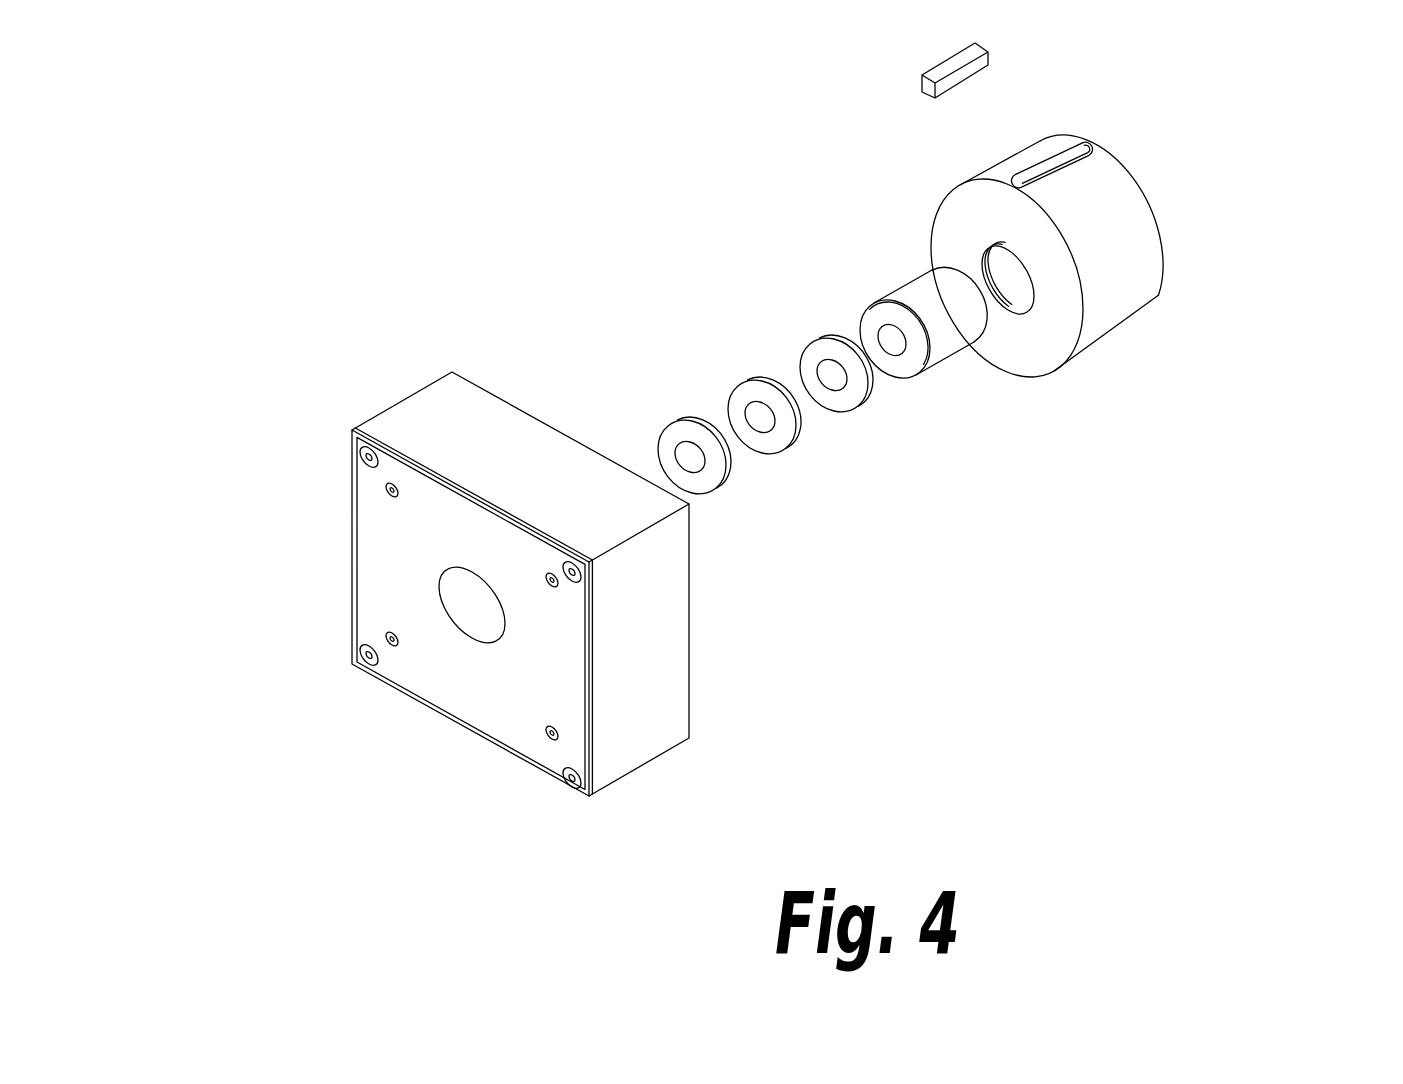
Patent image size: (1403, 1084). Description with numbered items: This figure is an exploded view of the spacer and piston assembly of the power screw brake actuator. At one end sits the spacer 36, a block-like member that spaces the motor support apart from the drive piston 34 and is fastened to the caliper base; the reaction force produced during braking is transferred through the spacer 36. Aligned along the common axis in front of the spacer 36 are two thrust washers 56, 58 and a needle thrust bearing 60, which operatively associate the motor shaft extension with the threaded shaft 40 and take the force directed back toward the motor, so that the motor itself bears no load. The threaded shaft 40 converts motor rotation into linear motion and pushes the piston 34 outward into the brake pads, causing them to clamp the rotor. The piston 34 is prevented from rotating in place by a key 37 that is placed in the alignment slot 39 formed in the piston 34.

The drive piston 34 is at (1160, 296).
The spacer 36 is at (417, 587).
The key 37 is at (982, 78).
The alignment slot 39 is at (1058, 163).
The threaded shaft 40 is at (895, 300).
The thrust washer 56 is at (675, 412).
The thrust washer 58 is at (802, 355).
The needle thrust bearing 60 is at (787, 452).